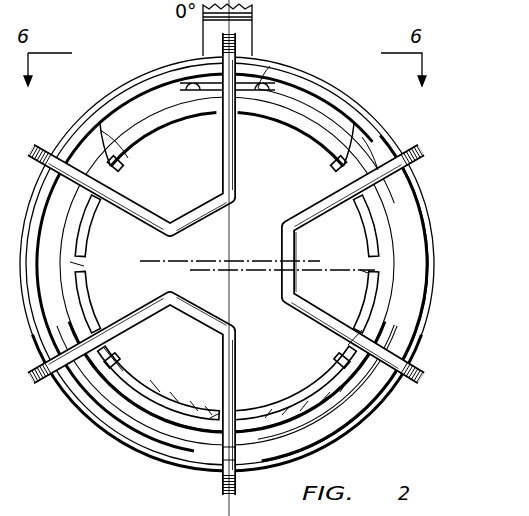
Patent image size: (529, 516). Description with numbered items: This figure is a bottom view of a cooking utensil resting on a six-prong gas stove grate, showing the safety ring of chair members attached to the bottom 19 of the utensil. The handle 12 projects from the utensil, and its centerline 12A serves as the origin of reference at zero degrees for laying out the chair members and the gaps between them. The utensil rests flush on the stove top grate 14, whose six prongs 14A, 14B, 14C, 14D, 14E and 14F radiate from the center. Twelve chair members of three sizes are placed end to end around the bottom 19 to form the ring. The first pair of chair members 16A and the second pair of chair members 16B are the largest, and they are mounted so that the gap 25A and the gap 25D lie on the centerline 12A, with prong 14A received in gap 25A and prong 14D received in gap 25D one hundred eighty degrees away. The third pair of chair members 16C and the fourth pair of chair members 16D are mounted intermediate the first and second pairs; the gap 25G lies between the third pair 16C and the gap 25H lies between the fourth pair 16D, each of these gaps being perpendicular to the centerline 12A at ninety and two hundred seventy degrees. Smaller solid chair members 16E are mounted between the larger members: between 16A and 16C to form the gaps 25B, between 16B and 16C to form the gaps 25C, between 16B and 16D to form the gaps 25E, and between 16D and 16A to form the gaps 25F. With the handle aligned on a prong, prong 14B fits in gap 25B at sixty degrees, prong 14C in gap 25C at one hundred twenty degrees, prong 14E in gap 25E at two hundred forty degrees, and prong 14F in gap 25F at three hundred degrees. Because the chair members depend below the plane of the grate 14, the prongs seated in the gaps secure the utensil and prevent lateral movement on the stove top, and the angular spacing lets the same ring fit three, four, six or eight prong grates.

The handle 12 is at (240, 32).
The centerline 12A is at (229, 245).
The stove top grate 14 is at (40, 142).
The prong 14A is at (235, 160).
The prong 14B is at (322, 208).
The prong 14C is at (300, 316).
The prong 14D is at (236, 357).
The prong 14E is at (128, 318).
The prong 14F is at (122, 196).
The first pair of chair members 16A is at (170, 118).
The second pair of chair members 16B is at (178, 405).
The third pair of chair members 16C is at (368, 237).
The fourth pair of chair members 16D is at (84, 230).
The chair member 16E is at (105, 163).
The bottom 19 is at (35, 510).
The gap 25A is at (270, 66).
The gap 25B is at (362, 137).
The gap 25C is at (362, 330).
The gap 25D is at (220, 413).
The gap 25E is at (123, 371).
The gap 25F is at (126, 156).
The gap 25G is at (368, 273).
The gap 25H is at (84, 266).